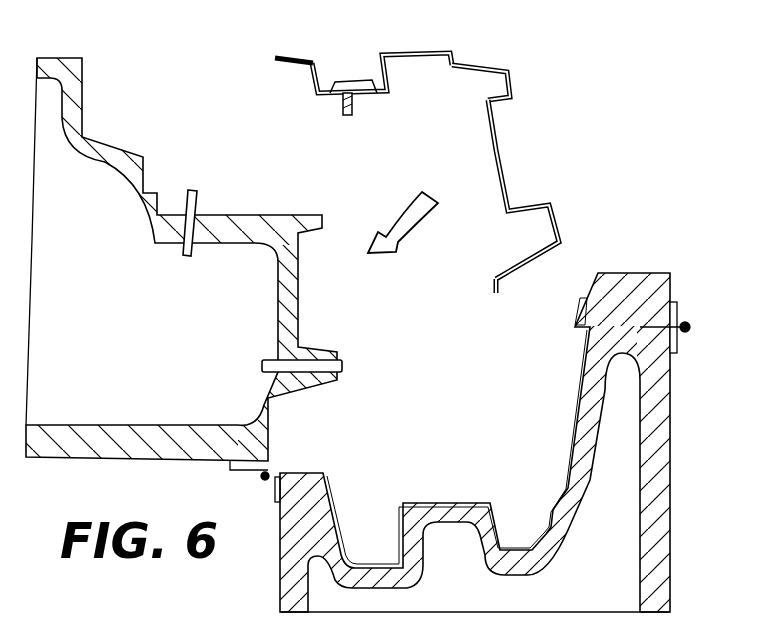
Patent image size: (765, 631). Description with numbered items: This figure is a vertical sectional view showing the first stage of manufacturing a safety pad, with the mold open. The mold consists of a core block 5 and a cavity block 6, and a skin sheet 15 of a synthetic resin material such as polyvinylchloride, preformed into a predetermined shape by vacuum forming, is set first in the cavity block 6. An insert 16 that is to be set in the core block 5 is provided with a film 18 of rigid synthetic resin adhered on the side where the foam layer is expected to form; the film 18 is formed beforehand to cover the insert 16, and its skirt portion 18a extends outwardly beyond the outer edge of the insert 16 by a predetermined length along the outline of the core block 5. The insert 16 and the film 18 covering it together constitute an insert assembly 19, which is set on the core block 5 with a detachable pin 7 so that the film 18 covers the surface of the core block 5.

The core block 5 is at (255, 204).
The cavity block 6 is at (694, 292).
The detachable pin 7 is at (197, 203).
The skin sheet 15 is at (328, 496).
The insert 16 is at (423, 60).
The film 18 is at (508, 183).
The skirt portion 18a is at (278, 62).
The insert assembly 19 is at (516, 83).